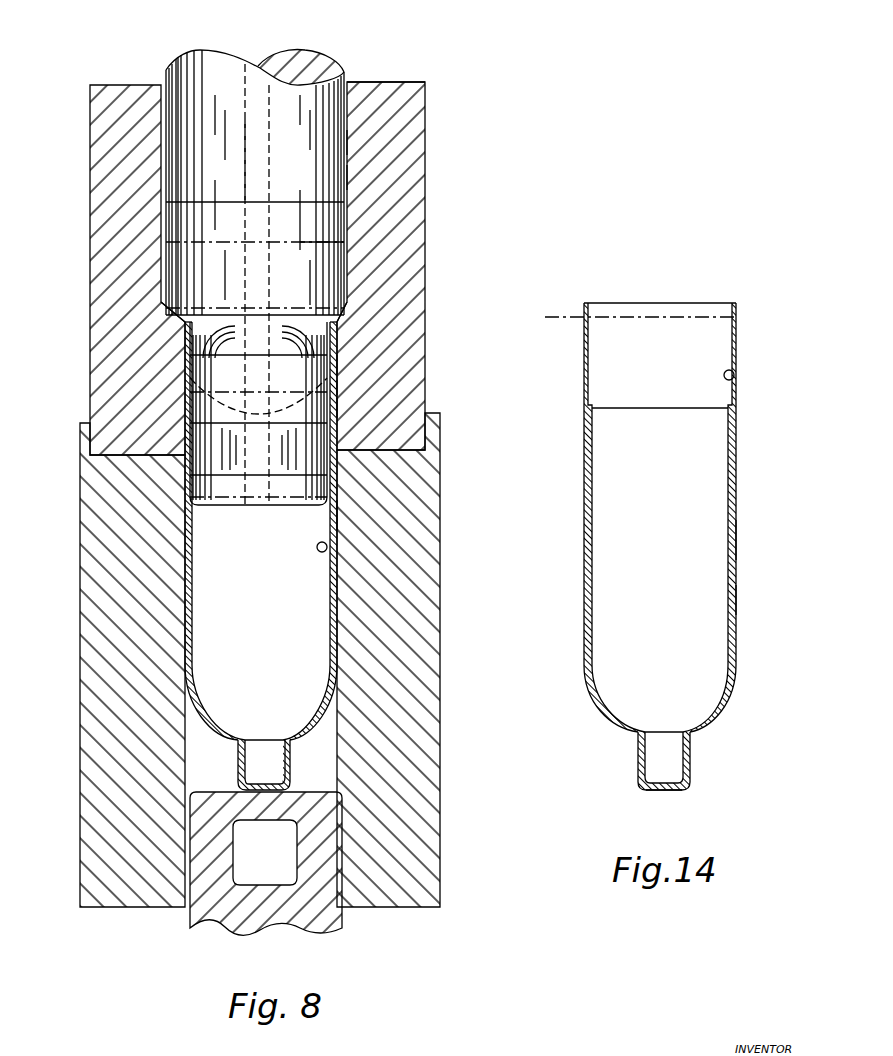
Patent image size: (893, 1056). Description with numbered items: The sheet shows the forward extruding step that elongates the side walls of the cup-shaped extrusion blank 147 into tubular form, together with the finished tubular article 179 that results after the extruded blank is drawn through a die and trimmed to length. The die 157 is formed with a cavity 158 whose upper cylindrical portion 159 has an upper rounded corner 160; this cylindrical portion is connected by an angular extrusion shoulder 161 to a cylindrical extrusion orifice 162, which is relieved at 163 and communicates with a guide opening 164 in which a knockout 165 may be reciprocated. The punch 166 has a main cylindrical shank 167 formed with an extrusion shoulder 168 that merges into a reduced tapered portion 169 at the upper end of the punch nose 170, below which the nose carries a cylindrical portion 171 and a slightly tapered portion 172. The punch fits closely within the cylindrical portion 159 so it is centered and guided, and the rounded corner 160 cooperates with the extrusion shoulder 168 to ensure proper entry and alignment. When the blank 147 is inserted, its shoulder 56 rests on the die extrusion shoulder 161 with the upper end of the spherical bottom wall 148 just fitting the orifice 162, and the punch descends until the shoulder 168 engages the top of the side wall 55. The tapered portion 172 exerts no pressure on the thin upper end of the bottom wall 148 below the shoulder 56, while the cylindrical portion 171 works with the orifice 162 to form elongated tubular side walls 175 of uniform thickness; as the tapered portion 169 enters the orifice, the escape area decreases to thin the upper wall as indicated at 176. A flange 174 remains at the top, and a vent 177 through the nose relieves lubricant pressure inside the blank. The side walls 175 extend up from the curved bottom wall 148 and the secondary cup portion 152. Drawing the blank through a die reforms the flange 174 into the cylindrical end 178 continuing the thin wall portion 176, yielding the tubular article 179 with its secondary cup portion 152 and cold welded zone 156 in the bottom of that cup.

In FIG. 8, the side wall 55 is at (335, 227).
In FIG. 8, the shoulder 56 is at (355, 290).
In FIG. 8, the extrusion blank 147 is at (340, 253).
In FIG. 8, the spherical bottom wall 148 is at (305, 737).
In FIG. 14, the spherical bottom wall 148 is at (718, 717).
In FIG. 8, the secondary cup portion 152 is at (238, 772).
In FIG. 14, the secondary cup portion 152 is at (637, 760).
In FIG. 14, the cold welded zone 156 is at (670, 788).
In FIG. 8, the die 157 is at (412, 117).
In FIG. 8, the cavity 158 is at (349, 142).
In FIG. 8, the upper cylindrical portion 159 is at (349, 175).
In FIG. 8, the upper rounded corner 160 is at (351, 81).
In FIG. 8, the angular extrusion shoulder 161 is at (338, 328).
In FIG. 8, the cylindrical extrusion orifice 162 is at (334, 365).
In FIG. 8, the relief 163 is at (334, 407).
In FIG. 8, the guide opening 164 is at (343, 595).
In FIG. 8, the knockout 165 is at (334, 918).
In FIG. 8, the punch 166 is at (320, 62).
In FIG. 8, the main cylindrical shank 167 is at (193, 137).
In FIG. 8, the extrusion shoulder 168 is at (170, 300).
In FIG. 8, the reduced tapered portion 169 is at (193, 345).
In FIG. 8, the punch nose 170 is at (223, 485).
In FIG. 8, the cylindrical portion 171 is at (200, 402).
In FIG. 8, the slightly tapered portion 172 is at (326, 462).
In FIG. 8, the flange 174 is at (342, 316).
In FIG. 8, the tubular side walls 175 is at (338, 517).
In FIG. 14, the tubular side walls 175 is at (741, 537).
In FIG. 8, the thin wall portion 176 is at (335, 387).
In FIG. 14, the thin wall portion 176 is at (734, 370).
In FIG. 8, the vent 177 is at (242, 167).
In FIG. 8, the cylindrical reformed flange portion 178 is at (333, 553).
In FIG. 14, the cylindrical reformed flange portion 178 is at (735, 325).
In FIG. 14, the tubular article 179 is at (743, 600).